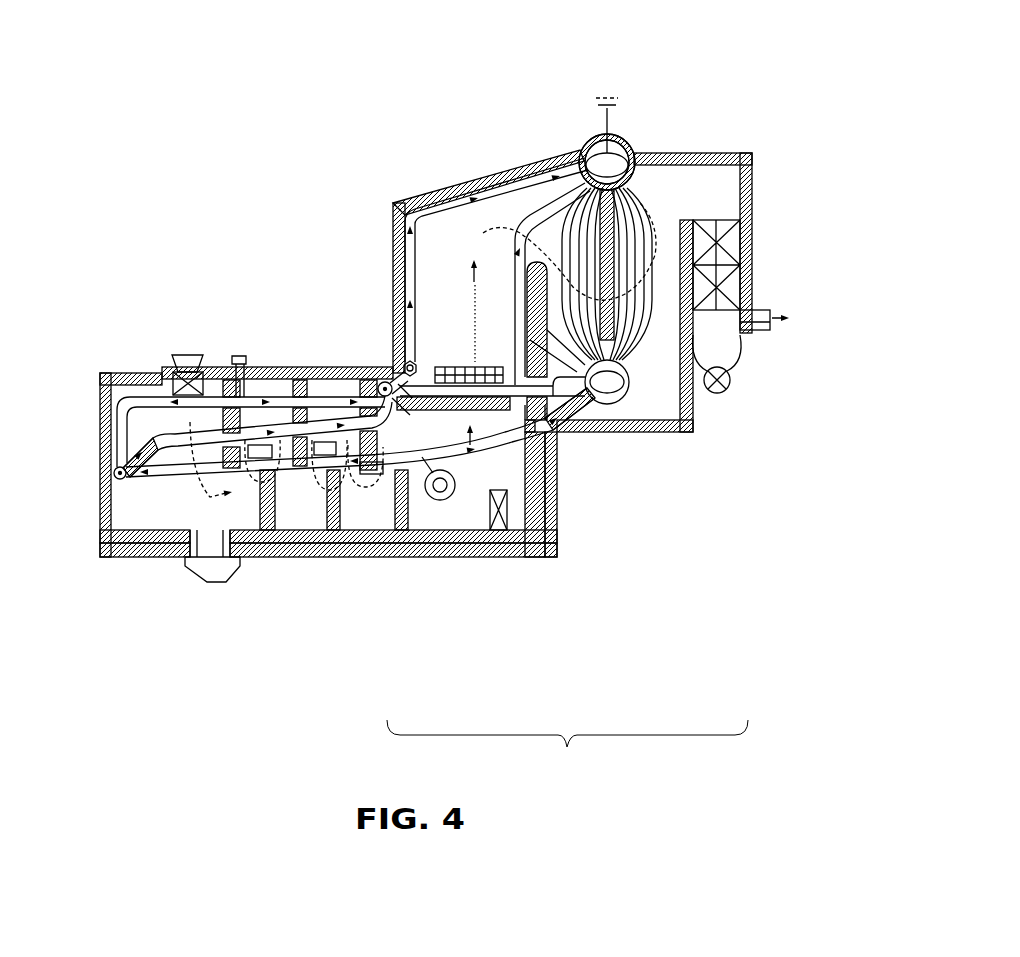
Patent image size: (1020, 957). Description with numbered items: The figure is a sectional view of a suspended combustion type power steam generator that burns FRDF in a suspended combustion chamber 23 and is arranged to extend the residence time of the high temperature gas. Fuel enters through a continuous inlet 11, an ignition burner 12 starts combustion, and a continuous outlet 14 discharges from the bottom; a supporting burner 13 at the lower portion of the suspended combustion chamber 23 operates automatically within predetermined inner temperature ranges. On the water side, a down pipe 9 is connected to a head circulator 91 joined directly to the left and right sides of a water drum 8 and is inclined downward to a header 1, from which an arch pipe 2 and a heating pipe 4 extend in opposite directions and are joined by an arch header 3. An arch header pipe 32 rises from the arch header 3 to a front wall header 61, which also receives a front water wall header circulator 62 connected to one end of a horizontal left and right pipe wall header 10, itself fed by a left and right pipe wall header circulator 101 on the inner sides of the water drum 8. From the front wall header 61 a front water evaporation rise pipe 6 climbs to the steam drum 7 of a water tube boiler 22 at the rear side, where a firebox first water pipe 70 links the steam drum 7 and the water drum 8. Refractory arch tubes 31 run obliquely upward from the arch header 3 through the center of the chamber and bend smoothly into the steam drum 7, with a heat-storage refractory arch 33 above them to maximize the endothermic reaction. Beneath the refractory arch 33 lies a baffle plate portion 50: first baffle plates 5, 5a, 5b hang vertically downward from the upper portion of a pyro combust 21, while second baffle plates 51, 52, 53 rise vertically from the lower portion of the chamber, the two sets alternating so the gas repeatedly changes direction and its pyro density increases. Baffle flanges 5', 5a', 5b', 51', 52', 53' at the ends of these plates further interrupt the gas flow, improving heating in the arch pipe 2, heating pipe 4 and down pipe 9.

The header 1 is at (113, 478).
The arch pipe 2 is at (100, 402).
The arch header 3 is at (382, 383).
The heating pipe 4 is at (115, 440).
The first baffle plate 5 is at (245, 370).
The baffle flange 5' is at (256, 529).
The first baffle plate 5a is at (291, 398).
The baffle flange 5a' is at (281, 523).
The first baffle plate 5b is at (338, 395).
The baffle flange 5b' is at (355, 532).
The front water evaporation rise pipe 6 is at (418, 198).
The steam drum 7 is at (608, 158).
The water drum 8 is at (630, 393).
The down pipe 9 is at (545, 478).
The left and right pipe wall header 10 is at (515, 405).
The continuous inlet 11 is at (172, 362).
The ignition burner 12 is at (190, 356).
The supporting burner 13 is at (508, 500).
The continuous outlet 14 is at (228, 560).
The pyro combust 21 is at (128, 378).
The water tube boiler 22 is at (670, 200).
The suspended combustion chamber 23 is at (186, 560).
The refractory arch tube 31 is at (414, 290).
The arch header pipe 32 is at (388, 380).
The refractory arch 33 is at (466, 364).
The baffle plate portion 50 is at (567, 736).
The second baffle plate 51 is at (270, 539).
The baffle flange 51' is at (309, 552).
The second baffle plate 52 is at (249, 392).
The baffle flange 52' is at (329, 524).
The second baffle plate 53 is at (382, 526).
The baffle flange 53' is at (332, 395).
The front wall header 61 is at (395, 362).
The front water wall header circulator 62 is at (410, 360).
The firebox first water pipe 70 is at (500, 235).
The head circulator 91 is at (620, 428).
The left and right pipe wall header circulator 101 is at (605, 430).